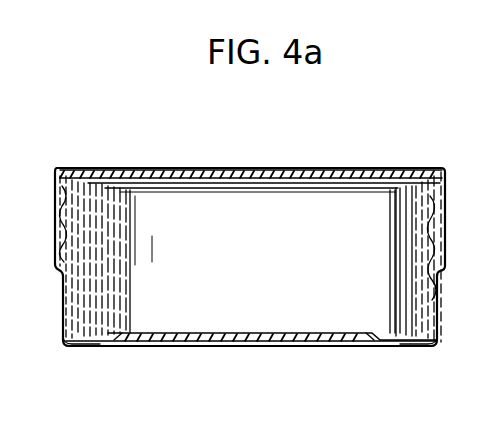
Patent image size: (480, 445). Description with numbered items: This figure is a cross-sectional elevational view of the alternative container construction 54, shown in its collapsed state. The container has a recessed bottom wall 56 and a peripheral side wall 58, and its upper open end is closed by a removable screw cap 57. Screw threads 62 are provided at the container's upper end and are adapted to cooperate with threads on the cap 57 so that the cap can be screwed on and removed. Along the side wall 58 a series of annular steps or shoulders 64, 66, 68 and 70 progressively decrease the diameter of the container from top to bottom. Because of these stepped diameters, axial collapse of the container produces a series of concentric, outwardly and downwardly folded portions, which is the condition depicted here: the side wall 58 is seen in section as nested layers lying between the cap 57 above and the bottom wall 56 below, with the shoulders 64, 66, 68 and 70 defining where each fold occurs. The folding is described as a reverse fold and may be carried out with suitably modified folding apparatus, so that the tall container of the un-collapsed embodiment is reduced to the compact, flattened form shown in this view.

The container construction 54 is at (276, 141).
The recessed bottom wall 56 is at (274, 347).
The removable screw cap 57 is at (148, 168).
The peripheral side wall 58 is at (269, 280).
The screw threads 62 is at (447, 215).
The annular step or shoulder 64 is at (67, 347).
The annular step or shoulder 66 is at (87, 168).
The annular step or shoulder 68 is at (92, 347).
The annular step or shoulder 70 is at (103, 168).